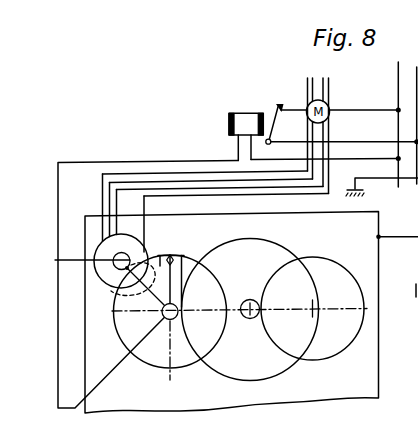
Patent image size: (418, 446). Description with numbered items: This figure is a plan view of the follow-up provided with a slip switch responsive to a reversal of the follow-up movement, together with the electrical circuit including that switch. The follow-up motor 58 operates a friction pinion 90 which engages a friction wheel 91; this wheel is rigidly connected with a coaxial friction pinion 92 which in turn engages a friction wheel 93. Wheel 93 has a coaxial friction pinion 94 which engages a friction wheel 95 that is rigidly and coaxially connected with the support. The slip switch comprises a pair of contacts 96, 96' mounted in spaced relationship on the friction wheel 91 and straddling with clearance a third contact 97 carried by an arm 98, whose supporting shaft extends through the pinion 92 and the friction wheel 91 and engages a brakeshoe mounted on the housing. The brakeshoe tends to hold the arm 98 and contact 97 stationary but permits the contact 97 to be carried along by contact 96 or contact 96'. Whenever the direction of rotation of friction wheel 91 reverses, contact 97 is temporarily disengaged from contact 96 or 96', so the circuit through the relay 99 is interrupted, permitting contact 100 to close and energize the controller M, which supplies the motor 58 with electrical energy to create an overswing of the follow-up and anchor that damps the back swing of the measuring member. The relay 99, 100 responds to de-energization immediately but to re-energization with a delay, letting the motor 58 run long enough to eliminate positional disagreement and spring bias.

The follow-up motor 58 is at (120, 234).
The friction pinion 90 is at (85, 260).
The friction wheel 91 is at (150, 364).
The friction pinion 92 is at (167, 320).
The friction wheel 93 is at (284, 248).
The friction pinion 94 is at (247, 318).
The friction wheel 95 is at (344, 272).
The contact 96 is at (157, 251).
The contact 96' is at (194, 272).
The third contact 97 is at (173, 254).
The arm 98 is at (182, 288).
The relay 99 is at (246, 113).
The contact 100 is at (282, 106).